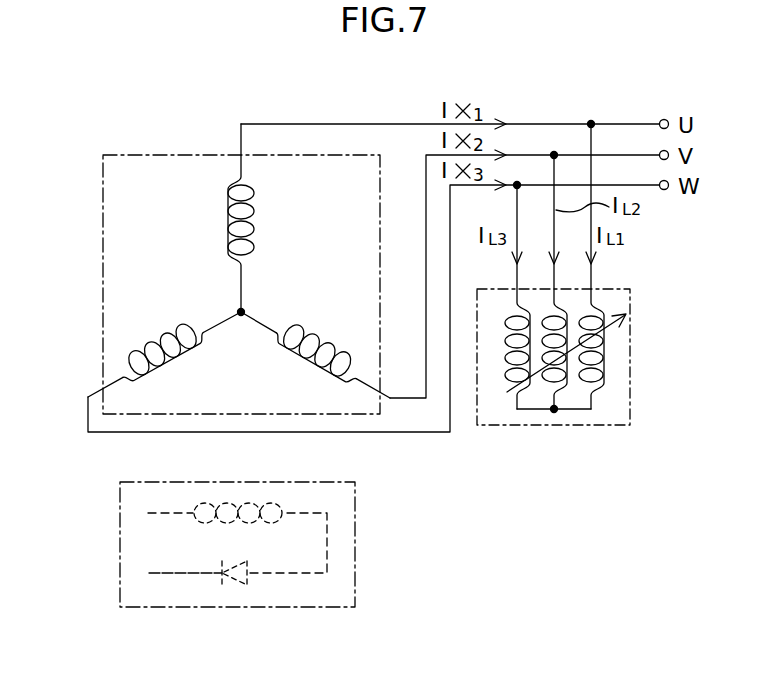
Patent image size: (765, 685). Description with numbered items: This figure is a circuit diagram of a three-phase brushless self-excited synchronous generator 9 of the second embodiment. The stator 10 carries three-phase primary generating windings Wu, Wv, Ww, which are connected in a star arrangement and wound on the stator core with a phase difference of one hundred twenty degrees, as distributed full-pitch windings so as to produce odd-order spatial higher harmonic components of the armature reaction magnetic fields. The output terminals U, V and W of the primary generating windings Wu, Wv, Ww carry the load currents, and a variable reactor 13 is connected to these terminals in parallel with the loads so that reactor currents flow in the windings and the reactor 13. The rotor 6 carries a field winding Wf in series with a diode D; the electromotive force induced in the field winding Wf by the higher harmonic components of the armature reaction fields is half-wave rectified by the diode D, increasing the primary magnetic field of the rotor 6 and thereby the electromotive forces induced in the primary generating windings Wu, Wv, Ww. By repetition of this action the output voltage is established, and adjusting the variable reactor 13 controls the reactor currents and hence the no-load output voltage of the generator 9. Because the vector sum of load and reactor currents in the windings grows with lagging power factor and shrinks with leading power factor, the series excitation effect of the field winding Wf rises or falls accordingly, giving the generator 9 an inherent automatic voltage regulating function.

The generator 9 is at (125, 145).
The stator 10 is at (103, 210).
The variable reactor 13 is at (503, 426).
The rotor 6 is at (120, 538).
The U-phase primary generating winding Wu is at (228, 241).
The V-phase primary generating winding Wv is at (312, 334).
The W-phase primary generating winding Ww is at (155, 377).
The field winding Wf is at (262, 500).
The diode D is at (232, 590).